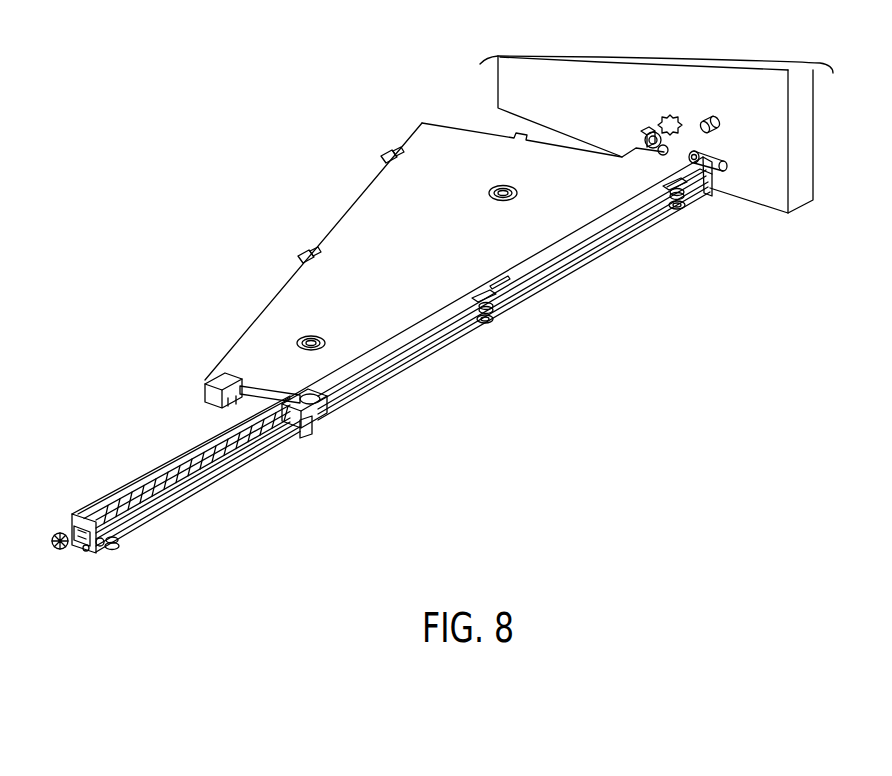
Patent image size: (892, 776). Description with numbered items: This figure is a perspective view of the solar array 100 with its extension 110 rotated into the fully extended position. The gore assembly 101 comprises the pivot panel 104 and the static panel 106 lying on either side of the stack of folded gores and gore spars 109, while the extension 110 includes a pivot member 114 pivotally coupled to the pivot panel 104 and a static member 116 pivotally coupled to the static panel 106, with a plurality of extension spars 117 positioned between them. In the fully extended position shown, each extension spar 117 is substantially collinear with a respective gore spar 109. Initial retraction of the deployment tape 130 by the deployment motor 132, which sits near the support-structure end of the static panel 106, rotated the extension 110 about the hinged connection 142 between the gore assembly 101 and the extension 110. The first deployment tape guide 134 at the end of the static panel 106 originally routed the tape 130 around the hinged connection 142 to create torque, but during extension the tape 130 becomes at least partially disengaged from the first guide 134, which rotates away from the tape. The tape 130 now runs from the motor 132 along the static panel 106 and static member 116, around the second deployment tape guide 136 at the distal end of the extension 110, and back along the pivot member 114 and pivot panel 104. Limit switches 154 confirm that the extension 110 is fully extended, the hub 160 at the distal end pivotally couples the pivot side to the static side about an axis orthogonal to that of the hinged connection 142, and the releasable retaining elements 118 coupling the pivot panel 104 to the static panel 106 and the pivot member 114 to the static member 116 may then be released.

The solar array 100 is at (340, 70).
The gore assembly 101 is at (270, 289).
The pivot panel 104 is at (534, 295).
The static panel 106 is at (585, 234).
The gore spars 109 is at (425, 357).
The extension 110 is at (264, 477).
The pivot member 114 is at (147, 522).
The static member 116 is at (205, 474).
The extension spars 117 is at (176, 508).
The releasable retaining elements 118 is at (386, 151).
The deployment tape 130 is at (304, 384).
The deployment motor 132 is at (725, 168).
The first deployment tape guide 134 is at (352, 423).
The second deployment tape guide 136 is at (68, 502).
The hinged connection 142 is at (316, 436).
The limit switches 154 is at (255, 384).
The hub 160 is at (73, 566).